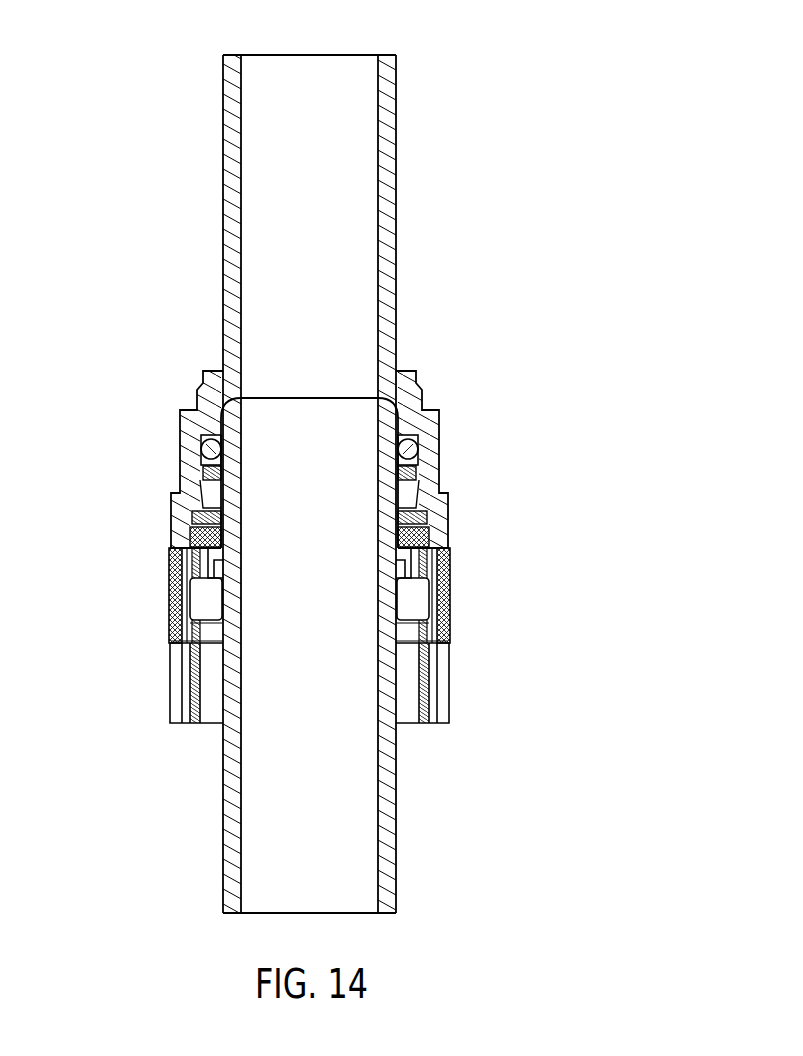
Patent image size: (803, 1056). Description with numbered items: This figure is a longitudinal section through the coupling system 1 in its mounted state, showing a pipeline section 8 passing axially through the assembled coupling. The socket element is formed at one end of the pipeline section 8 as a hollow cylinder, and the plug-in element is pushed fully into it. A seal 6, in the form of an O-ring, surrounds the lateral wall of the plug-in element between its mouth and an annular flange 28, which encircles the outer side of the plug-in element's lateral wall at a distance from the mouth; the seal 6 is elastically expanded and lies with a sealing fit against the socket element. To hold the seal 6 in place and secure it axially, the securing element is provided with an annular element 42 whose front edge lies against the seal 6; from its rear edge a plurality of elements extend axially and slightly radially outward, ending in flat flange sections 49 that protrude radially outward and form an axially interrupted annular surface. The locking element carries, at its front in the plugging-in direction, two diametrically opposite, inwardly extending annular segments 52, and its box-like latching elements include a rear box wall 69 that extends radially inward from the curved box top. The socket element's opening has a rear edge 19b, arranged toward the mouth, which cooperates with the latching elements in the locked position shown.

The coupling system 1 is at (566, 245).
The pipeline section 8 is at (396, 143).
The seal 6 is at (401, 449).
The annular element 42 is at (413, 473).
The flat flange sections 49 is at (422, 515).
The annular segments 52 is at (427, 542).
The annular flange 28 is at (403, 560).
The rear box wall 69 is at (177, 638).
The rear edge 19b is at (178, 643).